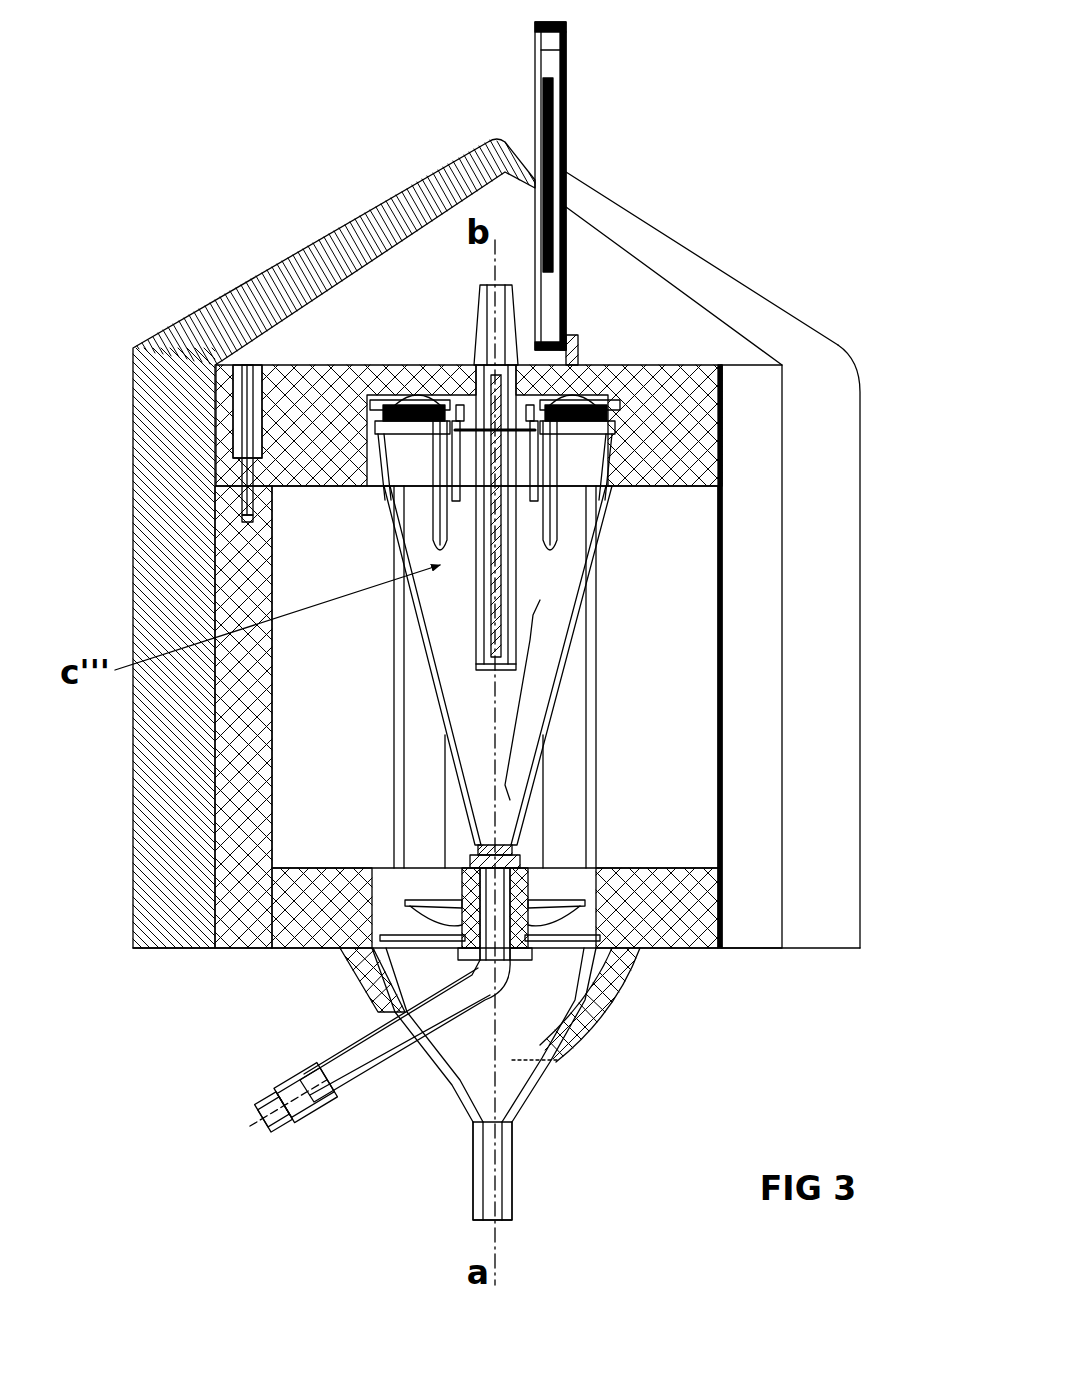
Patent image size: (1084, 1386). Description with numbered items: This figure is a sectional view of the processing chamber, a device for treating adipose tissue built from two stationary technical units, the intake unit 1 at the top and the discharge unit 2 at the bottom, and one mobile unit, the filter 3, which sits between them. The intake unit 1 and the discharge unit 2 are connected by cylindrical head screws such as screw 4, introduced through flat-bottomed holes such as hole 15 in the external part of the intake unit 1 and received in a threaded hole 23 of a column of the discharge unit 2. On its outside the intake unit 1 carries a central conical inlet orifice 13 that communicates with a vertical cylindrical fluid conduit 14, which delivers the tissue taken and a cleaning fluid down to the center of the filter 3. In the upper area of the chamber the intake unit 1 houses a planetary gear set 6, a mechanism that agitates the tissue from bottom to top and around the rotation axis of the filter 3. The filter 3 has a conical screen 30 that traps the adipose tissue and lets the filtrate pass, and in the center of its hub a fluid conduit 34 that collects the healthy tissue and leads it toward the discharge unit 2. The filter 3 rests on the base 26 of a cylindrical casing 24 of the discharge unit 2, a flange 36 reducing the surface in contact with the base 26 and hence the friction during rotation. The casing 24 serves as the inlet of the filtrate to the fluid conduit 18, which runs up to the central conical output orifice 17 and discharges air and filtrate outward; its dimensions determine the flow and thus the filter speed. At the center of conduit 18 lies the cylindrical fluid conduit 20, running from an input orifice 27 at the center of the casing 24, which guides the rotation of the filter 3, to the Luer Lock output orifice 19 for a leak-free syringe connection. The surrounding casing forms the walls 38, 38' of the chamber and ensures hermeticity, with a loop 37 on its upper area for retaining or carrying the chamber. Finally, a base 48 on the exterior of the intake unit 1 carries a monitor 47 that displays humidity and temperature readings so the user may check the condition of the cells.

The intake unit 1 is at (665, 388).
The discharge unit 2 is at (262, 928).
The filter 3 is at (532, 790).
The cylindrical head screw 4 is at (238, 446).
The planetary gear set 6 is at (433, 510).
The conical inlet orifice 13 is at (479, 312).
The fluid conduit 14 is at (503, 628).
The hole with flat bottom 15 is at (238, 402).
The conical output orifice 17 is at (518, 1188).
The fluid conduit 18 is at (512, 1062).
The Luer Lock output orifice 19 is at (300, 1092).
The fluid conduit 20 is at (545, 1042).
The threaded hole 23 is at (240, 520).
The casing 24 is at (385, 885).
The base 26 is at (520, 994).
The input orifice 27 is at (515, 895).
The screen 30 is at (445, 600).
The fluid conduit 34 is at (470, 872).
The flange 36 is at (536, 950).
The loop 37 is at (676, 238).
The wall 38 is at (820, 656).
The wall 38' is at (600, 677).
The monitor 47 is at (566, 120).
The base 48 is at (582, 348).